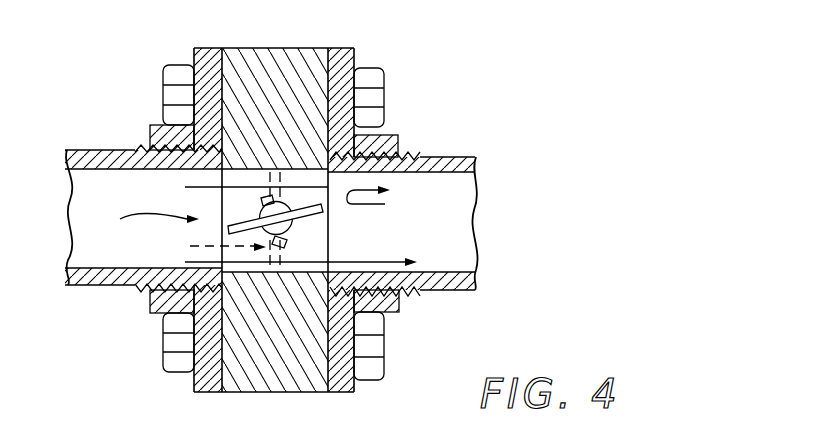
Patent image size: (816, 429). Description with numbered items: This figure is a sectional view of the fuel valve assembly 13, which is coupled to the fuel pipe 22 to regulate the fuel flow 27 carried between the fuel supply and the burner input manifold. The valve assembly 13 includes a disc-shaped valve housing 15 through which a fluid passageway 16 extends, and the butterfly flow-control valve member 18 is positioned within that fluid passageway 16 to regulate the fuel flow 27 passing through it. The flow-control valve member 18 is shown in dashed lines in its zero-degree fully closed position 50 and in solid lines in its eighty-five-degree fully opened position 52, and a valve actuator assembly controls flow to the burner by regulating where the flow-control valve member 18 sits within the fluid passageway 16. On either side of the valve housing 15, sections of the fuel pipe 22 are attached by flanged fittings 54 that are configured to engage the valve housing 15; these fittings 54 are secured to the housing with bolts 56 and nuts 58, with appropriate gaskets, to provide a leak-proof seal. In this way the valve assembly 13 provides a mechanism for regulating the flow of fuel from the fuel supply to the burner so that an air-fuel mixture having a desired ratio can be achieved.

The fuel valve assembly 13 is at (443, 100).
The valve housing 15 is at (294, 50).
The fluid passageway 16 is at (149, 230).
The flow-control valve member 18 is at (308, 214).
The fuel pipe 22 is at (100, 150).
The fuel flow 27 is at (381, 203).
The fully closed position 50 is at (210, 242).
The fully opened position 52 is at (239, 203).
The flanged fittings 54 is at (146, 312).
The bolts 56 is at (364, 72).
The nuts 58 is at (184, 72).